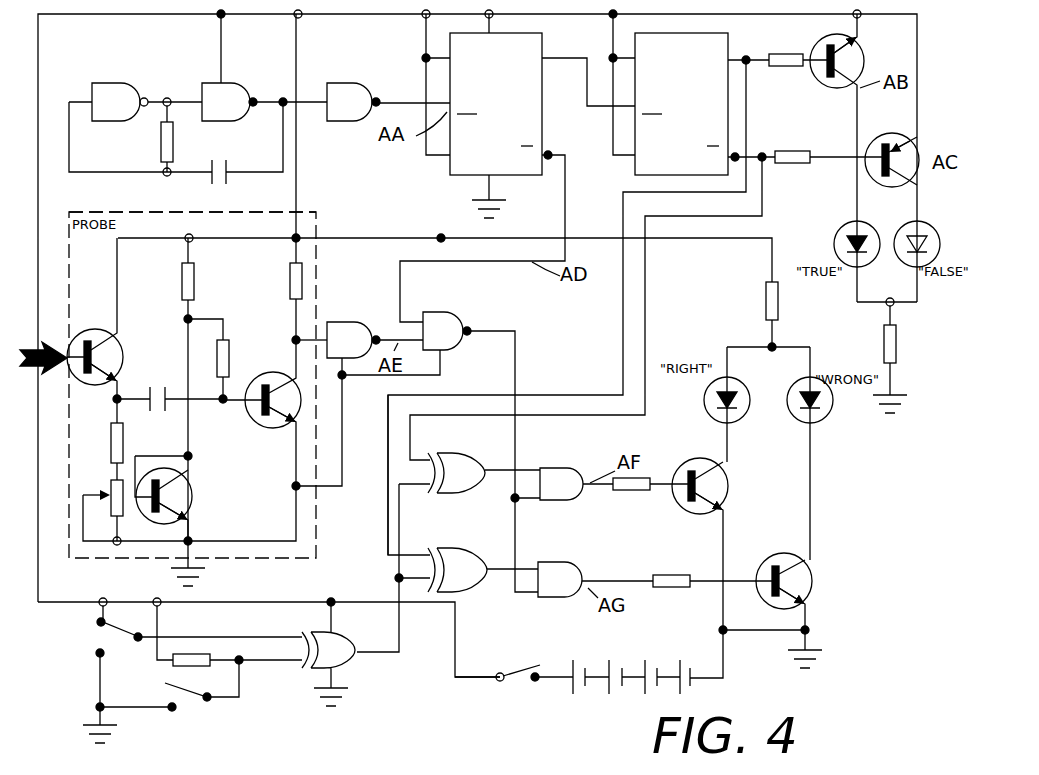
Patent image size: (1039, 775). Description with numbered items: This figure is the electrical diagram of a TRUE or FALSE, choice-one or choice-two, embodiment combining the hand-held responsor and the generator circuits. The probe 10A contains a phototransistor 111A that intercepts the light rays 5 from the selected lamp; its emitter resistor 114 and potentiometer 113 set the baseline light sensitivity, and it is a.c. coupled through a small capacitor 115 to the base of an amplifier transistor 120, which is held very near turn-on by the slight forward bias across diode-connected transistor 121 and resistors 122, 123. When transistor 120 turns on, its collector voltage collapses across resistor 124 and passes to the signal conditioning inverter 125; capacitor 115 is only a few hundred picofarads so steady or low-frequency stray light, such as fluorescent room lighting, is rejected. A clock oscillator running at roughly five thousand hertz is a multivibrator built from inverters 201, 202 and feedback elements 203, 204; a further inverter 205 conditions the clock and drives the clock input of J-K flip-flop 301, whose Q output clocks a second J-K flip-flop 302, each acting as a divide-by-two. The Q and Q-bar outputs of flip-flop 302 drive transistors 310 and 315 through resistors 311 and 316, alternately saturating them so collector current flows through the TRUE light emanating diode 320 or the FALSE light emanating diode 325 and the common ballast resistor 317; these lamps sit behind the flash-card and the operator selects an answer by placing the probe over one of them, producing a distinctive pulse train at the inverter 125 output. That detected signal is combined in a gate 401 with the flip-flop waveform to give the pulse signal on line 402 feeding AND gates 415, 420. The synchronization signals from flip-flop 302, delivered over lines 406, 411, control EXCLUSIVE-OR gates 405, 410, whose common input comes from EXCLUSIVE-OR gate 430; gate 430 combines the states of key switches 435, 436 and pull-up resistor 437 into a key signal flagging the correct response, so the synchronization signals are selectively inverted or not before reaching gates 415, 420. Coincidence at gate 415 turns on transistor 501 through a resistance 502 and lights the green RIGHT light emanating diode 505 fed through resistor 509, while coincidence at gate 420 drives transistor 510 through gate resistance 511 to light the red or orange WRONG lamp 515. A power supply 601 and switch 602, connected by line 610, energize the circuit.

The inverter 201 is at (125, 92).
The inverter 202 is at (239, 92).
The feedback element 203 is at (227, 172).
The feedback element 204 is at (163, 147).
The inverter 205 is at (377, 89).
The J-K flip-flop 301 is at (488, 156).
The J-K flip-flop 302 is at (668, 152).
The driver transistor 310 is at (862, 65).
The resistor 311 is at (787, 63).
The driver transistor 315 is at (898, 140).
The resistor 316 is at (806, 152).
The common ballast resistor 317 is at (896, 347).
The TRUE lamp 320 is at (837, 242).
The FALSE lamp 325 is at (935, 235).
The probe 10A is at (162, 222).
The light input 5 is at (47, 372).
The phototransistor 111A is at (95, 318).
The potentiometer 113 is at (110, 492).
The photodetector emitter resistor 114 is at (110, 444).
The capacitor 115 is at (148, 387).
The amplifier transistor 120 is at (278, 422).
The diode connected transistor 121 is at (163, 470).
The resistor 122 is at (182, 290).
The resistor 123 is at (229, 363).
The resistor 124 is at (288, 285).
The signal conditioning inverter 125 is at (355, 334).
The AND gate 401 is at (467, 323).
The line 402 is at (518, 376).
The EXCLUSIVE-OR gate 405 is at (464, 470).
The signal line 406 is at (388, 460).
The EXCLUSIVE-OR gate 410 is at (450, 578).
The signal line 411 is at (385, 539).
The AND gate 415 is at (584, 480).
The AND gate 420 is at (578, 577).
The EXCLUSIVE-OR gate 430 is at (349, 665).
The key switch 435 is at (92, 632).
The key switch 436 is at (187, 702).
The pull-up resistor 437 is at (201, 655).
The transistor 501 is at (729, 491).
The resistor 502 is at (623, 493).
The RIGHT indicator LED 505 is at (707, 388).
The resistor 509 is at (779, 303).
The transistor 510 is at (808, 589).
The gate resistance 511 is at (690, 572).
The WRONG lamp 515 is at (825, 403).
The power supply 601 is at (624, 656).
The switch 602 is at (517, 668).
The power line 610 is at (486, 680).